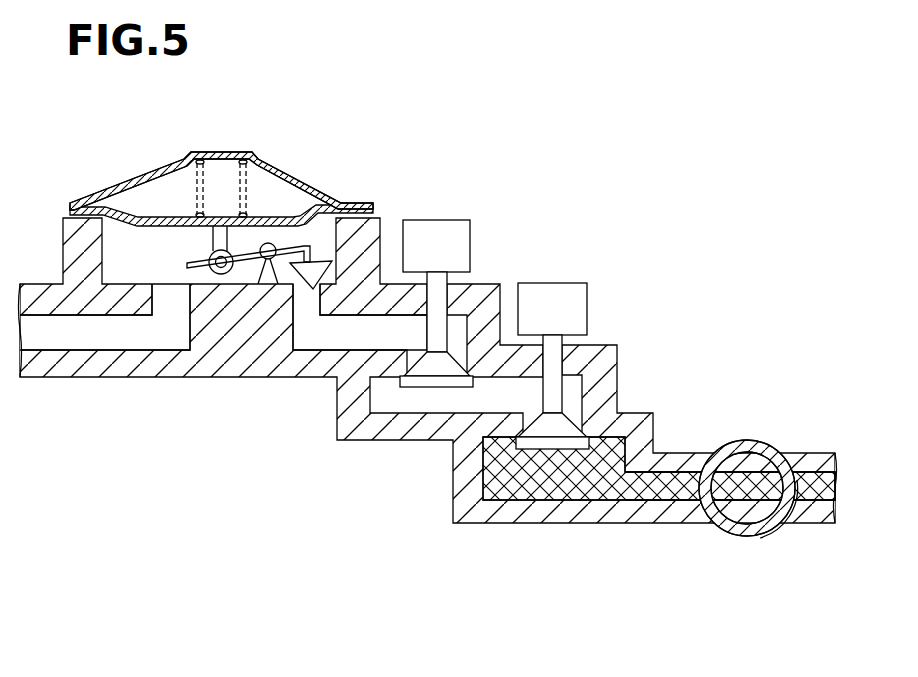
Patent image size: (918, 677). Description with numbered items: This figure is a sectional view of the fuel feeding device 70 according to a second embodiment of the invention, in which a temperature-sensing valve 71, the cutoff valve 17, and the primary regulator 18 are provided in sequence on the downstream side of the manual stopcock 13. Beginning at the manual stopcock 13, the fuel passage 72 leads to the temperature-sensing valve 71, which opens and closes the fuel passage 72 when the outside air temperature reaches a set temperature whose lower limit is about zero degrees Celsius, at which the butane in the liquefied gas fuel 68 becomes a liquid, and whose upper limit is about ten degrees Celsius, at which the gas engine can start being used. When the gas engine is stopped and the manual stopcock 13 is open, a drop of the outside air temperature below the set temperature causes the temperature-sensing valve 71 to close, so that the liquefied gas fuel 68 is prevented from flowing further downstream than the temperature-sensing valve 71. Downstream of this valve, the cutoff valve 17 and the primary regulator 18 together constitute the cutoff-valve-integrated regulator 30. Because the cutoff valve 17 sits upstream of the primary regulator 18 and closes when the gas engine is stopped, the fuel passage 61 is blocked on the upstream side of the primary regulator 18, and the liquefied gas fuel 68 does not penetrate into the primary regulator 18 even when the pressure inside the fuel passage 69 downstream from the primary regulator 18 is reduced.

The cutoff-valve-integrated regulator 30 is at (367, 122).
The primary regulator 18 is at (296, 165).
The fuel passage 61 is at (385, 320).
The cutoff valve 17 is at (440, 220).
The fuel feeding device 70 is at (622, 279).
The temperature-sensing valve 71 is at (551, 282).
The manual stopcock 13 is at (741, 438).
The fuel passage 69 is at (75, 350).
The fuel passage 72 is at (519, 490).
The liquefied gas fuel 68 is at (640, 498).